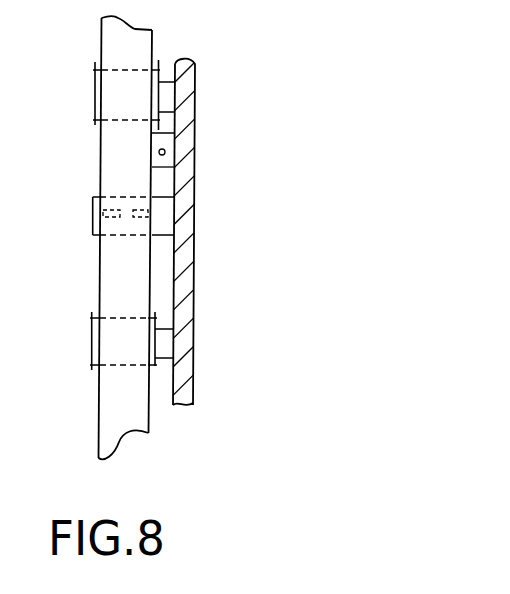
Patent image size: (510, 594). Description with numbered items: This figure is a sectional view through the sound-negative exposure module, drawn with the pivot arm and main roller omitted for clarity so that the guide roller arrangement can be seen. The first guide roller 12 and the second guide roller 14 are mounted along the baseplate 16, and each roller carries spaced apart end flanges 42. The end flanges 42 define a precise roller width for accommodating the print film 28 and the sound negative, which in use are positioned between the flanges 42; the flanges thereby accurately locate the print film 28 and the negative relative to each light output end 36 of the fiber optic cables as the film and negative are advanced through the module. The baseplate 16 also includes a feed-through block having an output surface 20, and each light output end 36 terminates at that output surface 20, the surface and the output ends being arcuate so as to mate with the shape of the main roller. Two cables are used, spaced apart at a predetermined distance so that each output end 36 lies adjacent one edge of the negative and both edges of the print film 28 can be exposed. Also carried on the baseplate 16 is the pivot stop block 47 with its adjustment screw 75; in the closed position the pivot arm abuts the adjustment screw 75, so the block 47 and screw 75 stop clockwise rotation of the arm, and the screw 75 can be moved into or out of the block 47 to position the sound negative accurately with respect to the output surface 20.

The first guide roller 12 is at (108, 348).
The second guide roller 14 is at (113, 66).
The baseplate 16 is at (190, 88).
The output surface 20 is at (92, 230).
The print film 28 is at (112, 425).
The light output end 36 is at (135, 209).
The end flanges 42 is at (158, 70).
The pivot stop block 47 is at (168, 165).
The adjustment screw 75 is at (165, 151).